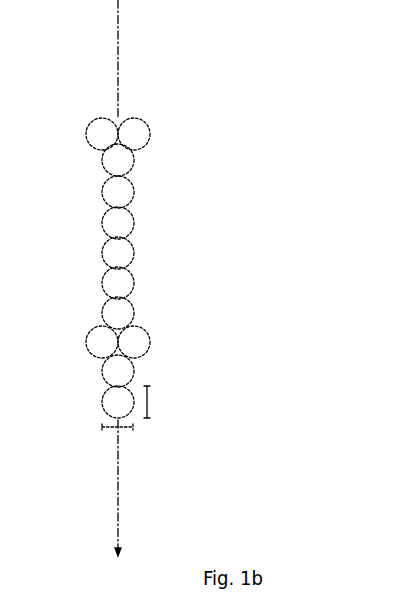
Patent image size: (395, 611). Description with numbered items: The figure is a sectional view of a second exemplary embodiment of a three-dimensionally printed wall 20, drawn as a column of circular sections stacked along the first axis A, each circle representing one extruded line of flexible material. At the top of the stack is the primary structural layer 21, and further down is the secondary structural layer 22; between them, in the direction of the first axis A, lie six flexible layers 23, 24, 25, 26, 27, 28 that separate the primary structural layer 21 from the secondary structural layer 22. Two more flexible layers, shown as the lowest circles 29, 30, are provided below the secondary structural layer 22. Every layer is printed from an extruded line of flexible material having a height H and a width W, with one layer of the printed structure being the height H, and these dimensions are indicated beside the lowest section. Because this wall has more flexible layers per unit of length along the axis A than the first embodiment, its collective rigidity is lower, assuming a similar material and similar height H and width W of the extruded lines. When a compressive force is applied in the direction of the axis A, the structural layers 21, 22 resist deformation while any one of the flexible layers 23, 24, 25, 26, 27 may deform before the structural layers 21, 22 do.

The wall 20 is at (154, 244).
The primary structural layer 21 is at (102, 134).
The secondary structural layer 22 is at (134, 342).
The flexible layer 23 is at (120, 160).
The flexible layer 24 is at (113, 192).
The flexible layer 25 is at (120, 221).
The flexible layer 26 is at (115, 253).
The flexible layer 27 is at (120, 282).
The flexible layer 28 is at (113, 313).
The layer 29 is at (117, 372).
The last layer 30 is at (118, 402).
The first axis A is at (118, 33).
The height H is at (151, 407).
The width W is at (122, 429).